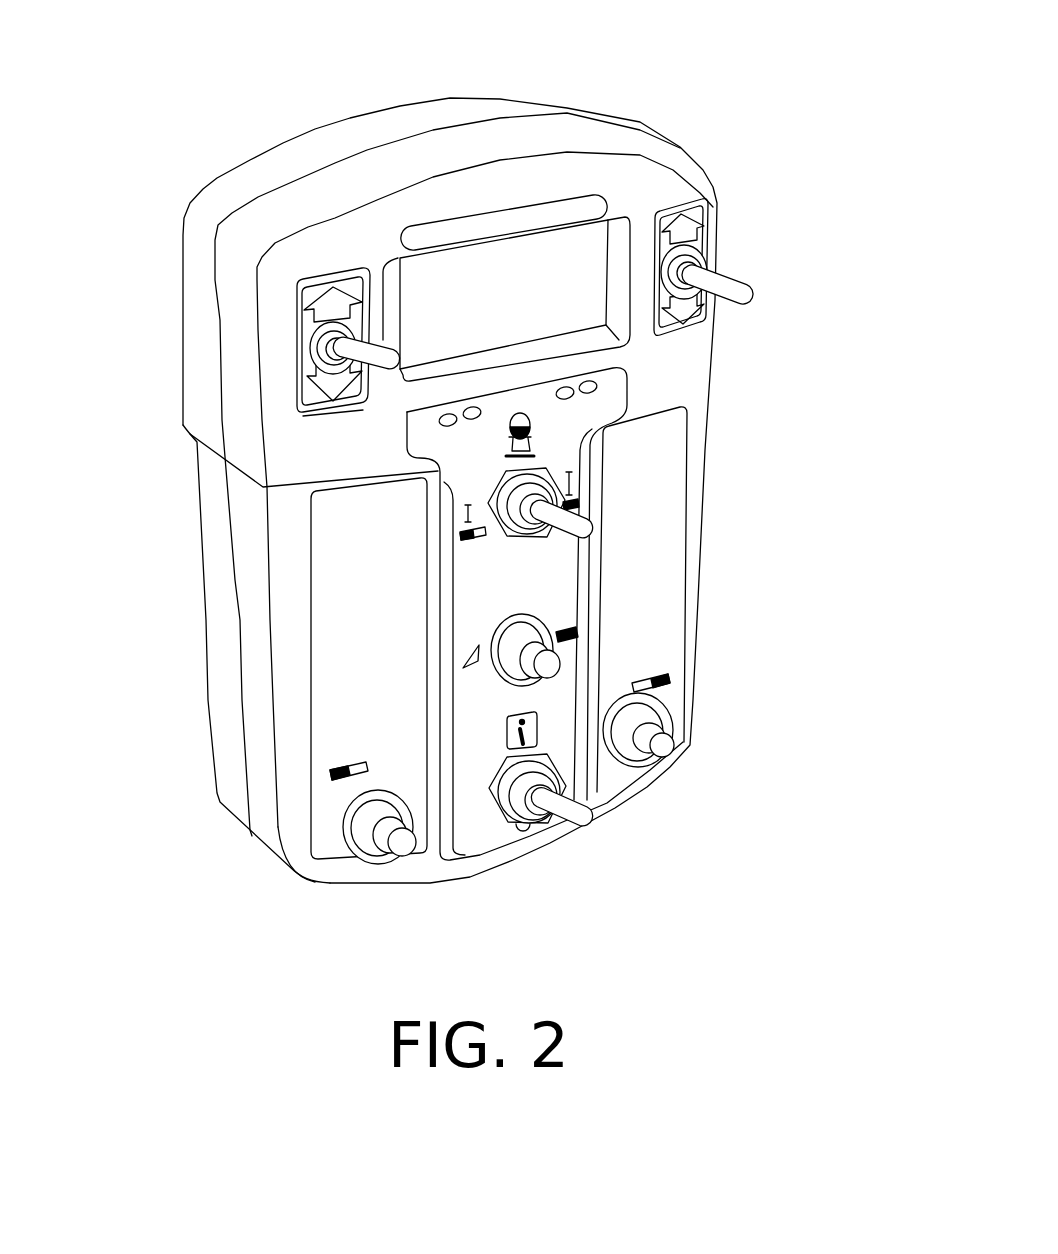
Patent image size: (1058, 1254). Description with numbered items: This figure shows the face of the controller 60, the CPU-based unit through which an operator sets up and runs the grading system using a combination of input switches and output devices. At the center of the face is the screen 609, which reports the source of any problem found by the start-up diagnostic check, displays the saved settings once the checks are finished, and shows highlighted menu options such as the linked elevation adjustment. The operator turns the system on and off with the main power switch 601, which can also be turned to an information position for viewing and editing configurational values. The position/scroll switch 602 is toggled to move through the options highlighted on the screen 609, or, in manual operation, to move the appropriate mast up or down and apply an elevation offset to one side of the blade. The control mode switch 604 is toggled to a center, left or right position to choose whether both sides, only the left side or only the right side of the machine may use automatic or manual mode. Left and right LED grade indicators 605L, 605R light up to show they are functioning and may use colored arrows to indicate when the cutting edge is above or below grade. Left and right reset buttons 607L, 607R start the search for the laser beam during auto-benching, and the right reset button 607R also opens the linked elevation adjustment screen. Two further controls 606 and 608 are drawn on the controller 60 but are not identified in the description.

The controller 60 is at (241, 100).
The main power switch 601 is at (583, 820).
The position/scroll switch 602 is at (360, 353).
The control mode switch 604 is at (582, 525).
The left LED grade indicator 605L is at (347, 665).
The right LED grade indicator 605R is at (630, 583).
The tuning knob 606 is at (547, 661).
The left reset button 607L is at (402, 842).
The right reset button 607R is at (663, 747).
The microphone 608 is at (512, 434).
The screen 609 is at (523, 275).